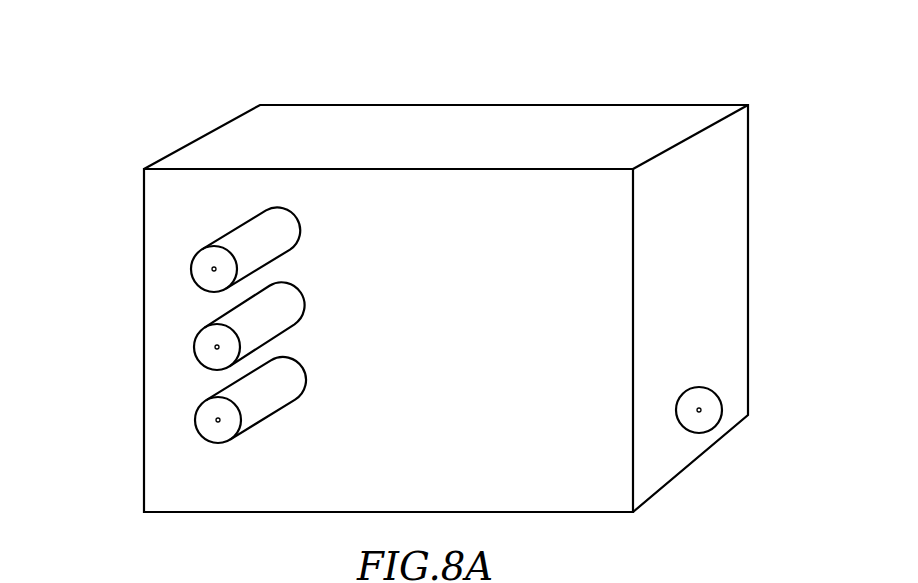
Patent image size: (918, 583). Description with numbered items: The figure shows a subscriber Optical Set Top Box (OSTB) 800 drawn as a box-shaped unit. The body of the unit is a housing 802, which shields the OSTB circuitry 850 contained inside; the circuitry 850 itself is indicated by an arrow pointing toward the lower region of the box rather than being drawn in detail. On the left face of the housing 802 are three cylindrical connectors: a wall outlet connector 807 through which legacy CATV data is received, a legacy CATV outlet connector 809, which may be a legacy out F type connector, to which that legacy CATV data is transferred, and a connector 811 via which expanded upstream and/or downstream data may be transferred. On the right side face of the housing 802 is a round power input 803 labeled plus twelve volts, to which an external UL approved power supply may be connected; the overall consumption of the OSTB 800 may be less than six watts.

The Optical Set Top Box 800 is at (453, 260).
The housing 802 is at (328, 127).
The power input 803 is at (708, 387).
The wall outlet connector 807 is at (210, 250).
The legacy CATV outlet connector 809 is at (213, 325).
The connector 811 is at (215, 400).
The OSTB circuitry 850 is at (752, 568).